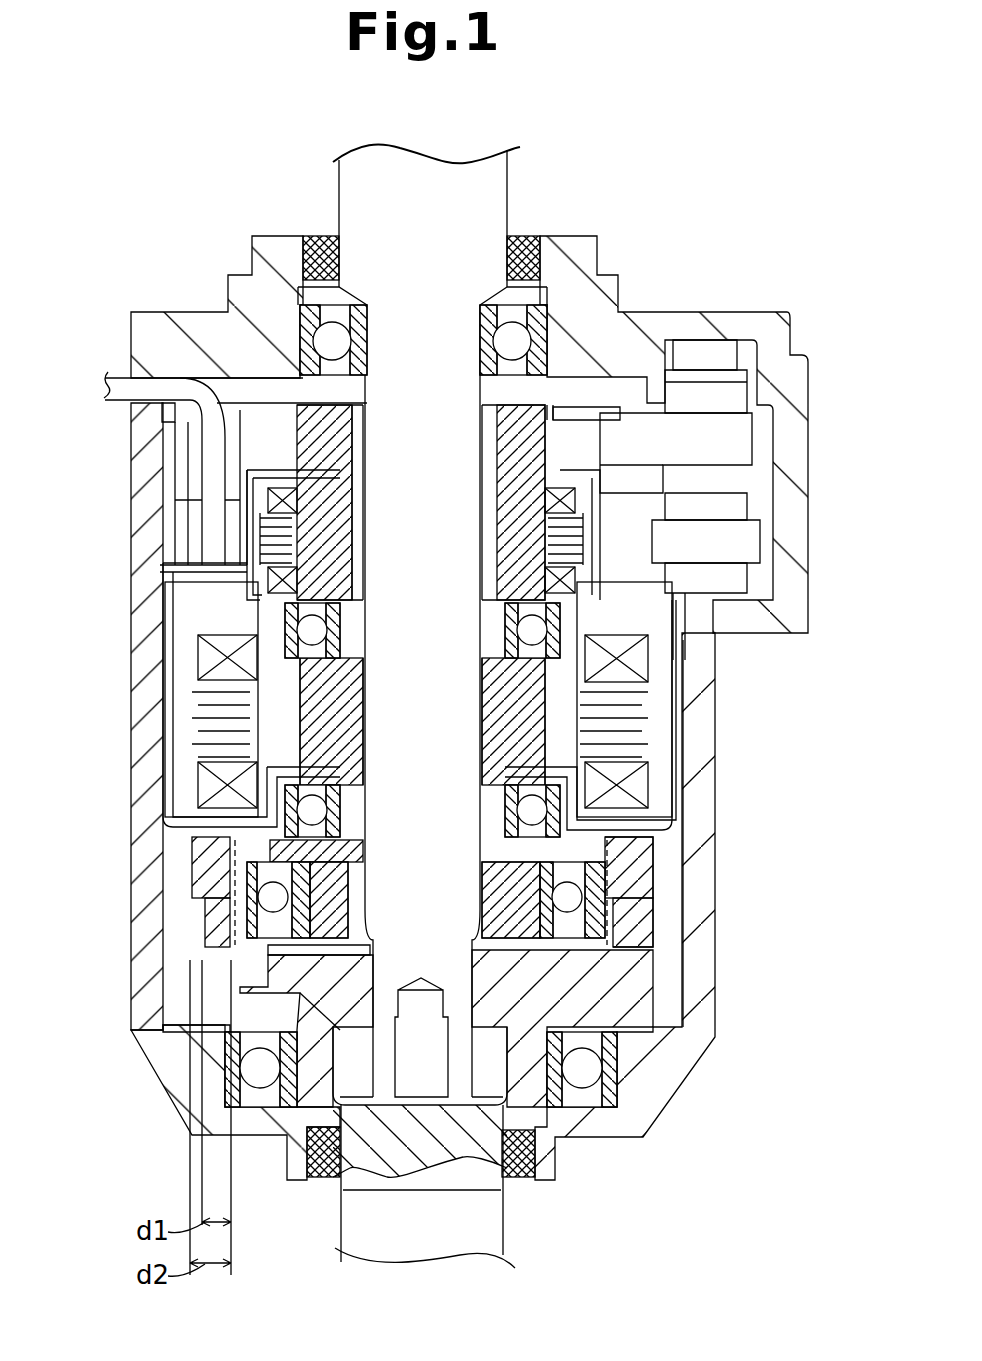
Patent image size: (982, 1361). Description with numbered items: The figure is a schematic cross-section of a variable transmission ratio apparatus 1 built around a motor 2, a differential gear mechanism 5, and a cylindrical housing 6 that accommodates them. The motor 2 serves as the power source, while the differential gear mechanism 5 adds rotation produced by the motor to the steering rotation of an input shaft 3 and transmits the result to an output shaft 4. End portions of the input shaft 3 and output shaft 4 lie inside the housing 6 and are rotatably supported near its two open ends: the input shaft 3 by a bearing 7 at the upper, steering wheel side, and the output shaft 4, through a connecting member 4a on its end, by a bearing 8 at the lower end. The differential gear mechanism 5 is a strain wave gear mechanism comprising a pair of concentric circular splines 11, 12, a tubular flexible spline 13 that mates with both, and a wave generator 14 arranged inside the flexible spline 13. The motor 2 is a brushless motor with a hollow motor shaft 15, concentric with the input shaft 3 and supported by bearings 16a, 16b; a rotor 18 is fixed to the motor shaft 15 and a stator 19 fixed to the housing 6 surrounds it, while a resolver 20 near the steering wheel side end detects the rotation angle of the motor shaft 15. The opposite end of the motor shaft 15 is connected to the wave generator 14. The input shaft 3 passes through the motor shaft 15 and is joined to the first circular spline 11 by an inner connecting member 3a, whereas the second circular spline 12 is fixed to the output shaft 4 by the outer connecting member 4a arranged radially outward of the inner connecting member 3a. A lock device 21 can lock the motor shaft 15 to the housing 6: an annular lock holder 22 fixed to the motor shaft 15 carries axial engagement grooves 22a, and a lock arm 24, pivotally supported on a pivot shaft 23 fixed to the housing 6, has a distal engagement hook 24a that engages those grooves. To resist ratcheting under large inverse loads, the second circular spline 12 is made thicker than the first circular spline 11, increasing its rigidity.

The variable transmission ratio apparatus 1 is at (753, 139).
The motor 2 is at (192, 617).
The input shaft 3 is at (497, 184).
The inner connecting member 3a is at (630, 962).
The output shaft 4 is at (495, 1225).
The outer connecting member 4a is at (165, 990).
The differential gear mechanism 5 is at (178, 833).
The housing 6 is at (128, 742).
The bearing 7 is at (300, 315).
The bearing 8 is at (600, 1048).
The first circular spline 11 is at (215, 915).
The second circular spline 12 is at (200, 860).
The flexible spline 13 is at (605, 910).
The wave generator 14 is at (338, 888).
The motor shaft 15 is at (350, 818).
The bearing 16a is at (505, 612).
The bearing 16b is at (525, 778).
The rotor 18 is at (537, 672).
The stator 19 is at (658, 712).
The resolver 20 is at (280, 528).
The lock device 21 is at (773, 431).
The lock holder 22 is at (515, 483).
The engagement grooves 22a is at (553, 405).
The pivot shaft 23 is at (732, 504).
The lock arm 24 is at (631, 457).
The engagement hook 24a is at (620, 410).